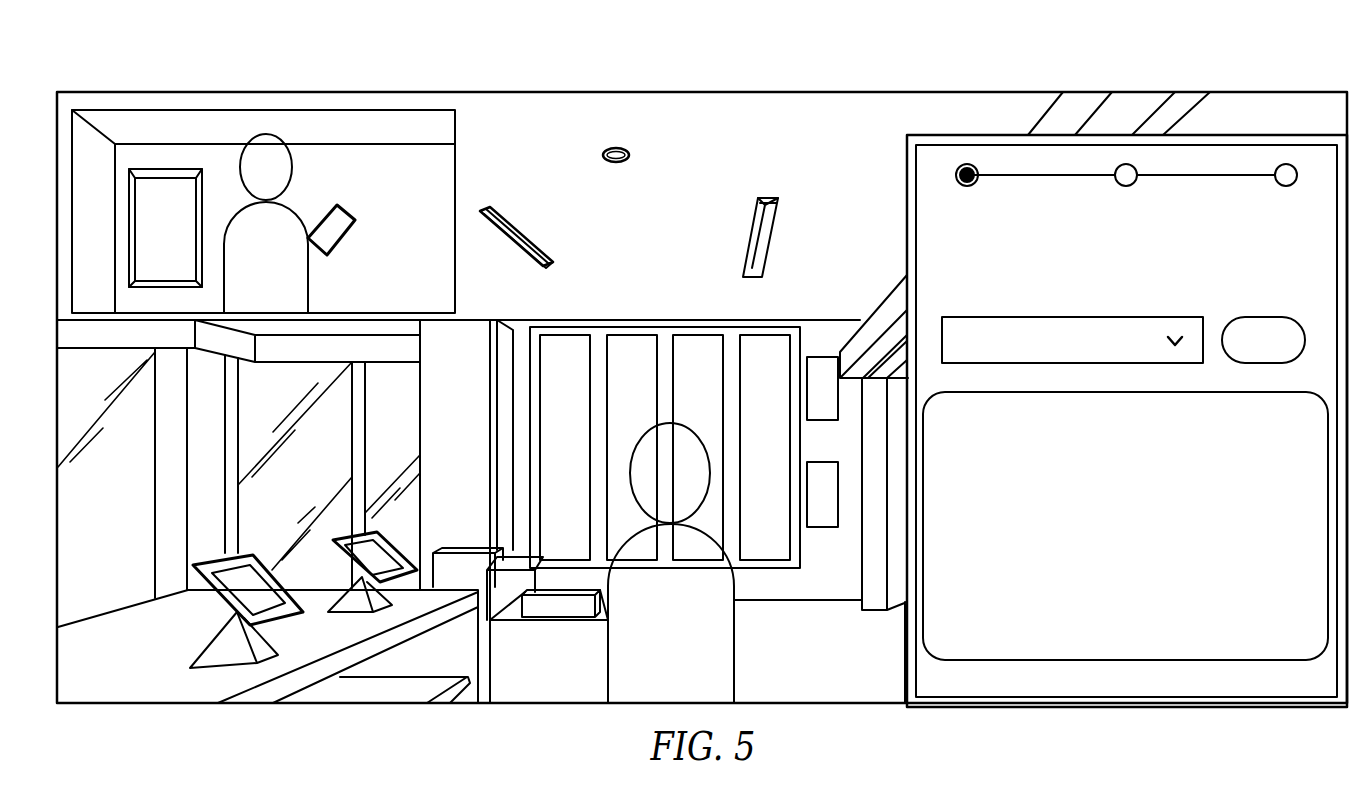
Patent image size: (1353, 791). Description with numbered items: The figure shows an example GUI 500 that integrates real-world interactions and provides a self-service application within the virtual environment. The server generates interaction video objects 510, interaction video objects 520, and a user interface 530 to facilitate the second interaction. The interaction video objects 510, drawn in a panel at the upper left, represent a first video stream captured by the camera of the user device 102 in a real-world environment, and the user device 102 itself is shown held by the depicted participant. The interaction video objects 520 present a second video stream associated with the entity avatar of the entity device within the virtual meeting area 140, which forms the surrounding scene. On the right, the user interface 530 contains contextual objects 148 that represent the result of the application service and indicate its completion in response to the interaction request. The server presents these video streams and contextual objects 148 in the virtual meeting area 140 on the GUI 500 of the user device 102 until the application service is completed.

The GUI 500 is at (702, 367).
The interaction video objects 510 is at (296, 167).
The user device 102 is at (357, 233).
The virtual meeting area 140 is at (688, 113).
The user interface 530 is at (895, 165).
The contextual objects 148 is at (1124, 228).
The interaction video objects 520 is at (671, 563).